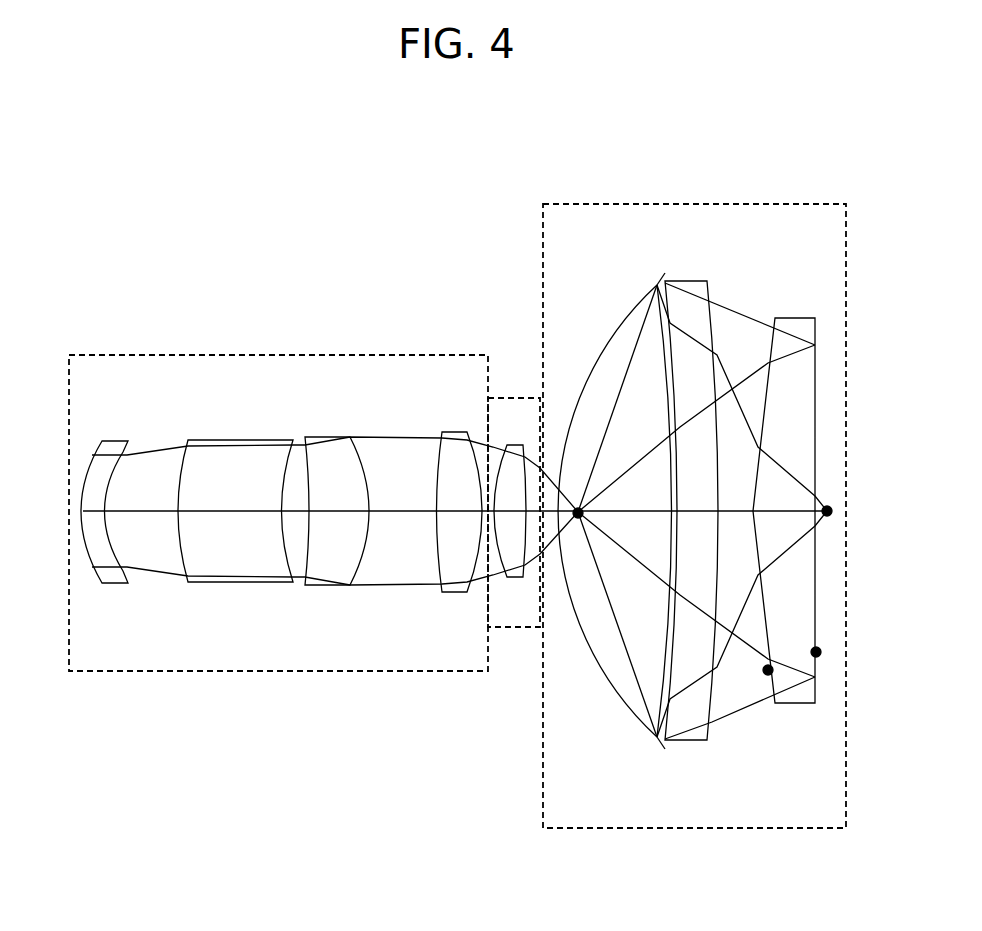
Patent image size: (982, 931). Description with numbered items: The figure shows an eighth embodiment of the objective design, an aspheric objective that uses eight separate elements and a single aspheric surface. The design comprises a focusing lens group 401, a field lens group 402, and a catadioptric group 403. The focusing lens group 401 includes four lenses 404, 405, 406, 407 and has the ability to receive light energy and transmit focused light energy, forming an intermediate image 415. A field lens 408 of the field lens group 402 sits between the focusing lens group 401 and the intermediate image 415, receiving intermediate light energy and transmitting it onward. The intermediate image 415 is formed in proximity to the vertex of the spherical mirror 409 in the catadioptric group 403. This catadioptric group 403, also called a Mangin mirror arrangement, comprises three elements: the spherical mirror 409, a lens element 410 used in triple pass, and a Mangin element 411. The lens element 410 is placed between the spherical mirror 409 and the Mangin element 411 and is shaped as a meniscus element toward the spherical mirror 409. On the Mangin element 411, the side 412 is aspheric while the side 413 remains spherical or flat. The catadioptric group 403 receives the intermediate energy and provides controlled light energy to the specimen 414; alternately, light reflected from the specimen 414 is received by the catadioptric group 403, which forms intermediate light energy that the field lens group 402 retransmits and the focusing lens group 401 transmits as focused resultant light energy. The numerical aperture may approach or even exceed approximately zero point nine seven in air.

The focusing lens group 401 is at (278, 491).
The field lens group 402 is at (512, 396).
The catadioptric group 403 is at (694, 492).
The lens 404 is at (111, 487).
The lens 405 is at (235, 486).
The lens 406 is at (335, 488).
The lens 407 is at (450, 492).
The field lens 408 is at (516, 498).
The spherical mirror 409 is at (614, 511).
The lens element 410 is at (691, 492).
The Mangin element 411 is at (787, 493).
The side of Mangin element 412 is at (768, 670).
The side of Mangin element 413 is at (816, 652).
The specimen 414 is at (827, 511).
The intermediate image 415 is at (578, 513).